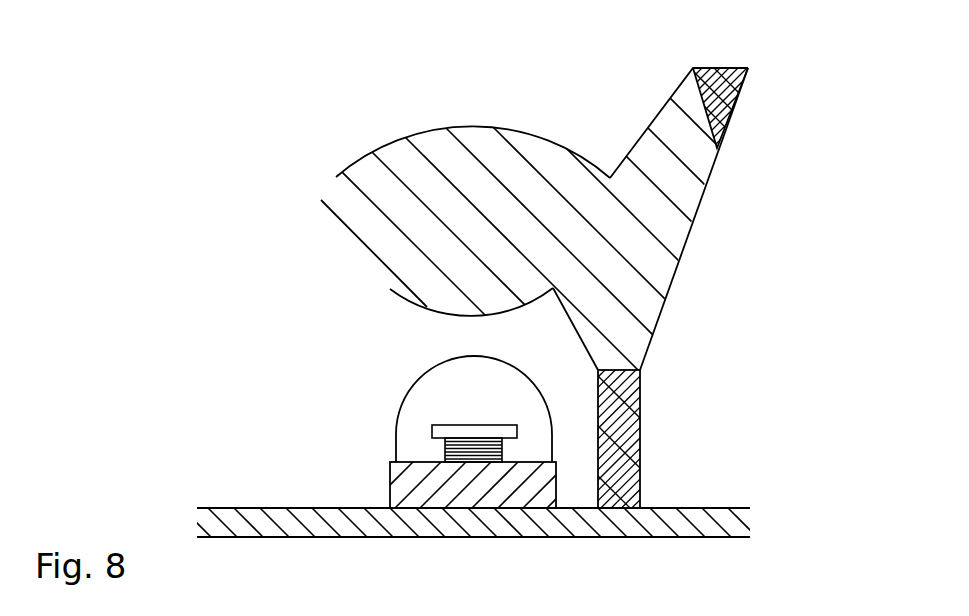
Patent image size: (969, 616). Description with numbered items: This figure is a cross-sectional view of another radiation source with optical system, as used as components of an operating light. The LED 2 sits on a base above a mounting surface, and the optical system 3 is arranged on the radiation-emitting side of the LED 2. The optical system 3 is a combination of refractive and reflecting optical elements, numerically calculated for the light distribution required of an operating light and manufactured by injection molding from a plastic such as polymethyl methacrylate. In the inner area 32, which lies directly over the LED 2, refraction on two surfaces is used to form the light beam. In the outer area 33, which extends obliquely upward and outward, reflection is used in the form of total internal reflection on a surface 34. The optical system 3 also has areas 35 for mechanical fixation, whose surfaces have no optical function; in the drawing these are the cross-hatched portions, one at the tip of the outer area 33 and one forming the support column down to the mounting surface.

The LED 2 is at (380, 428).
The optical system 3 is at (589, 255).
The inner area 32 is at (480, 143).
The outer area 33 is at (688, 102).
The surface 34 is at (712, 179).
The areas for mechanical fixation 35 is at (730, 98).